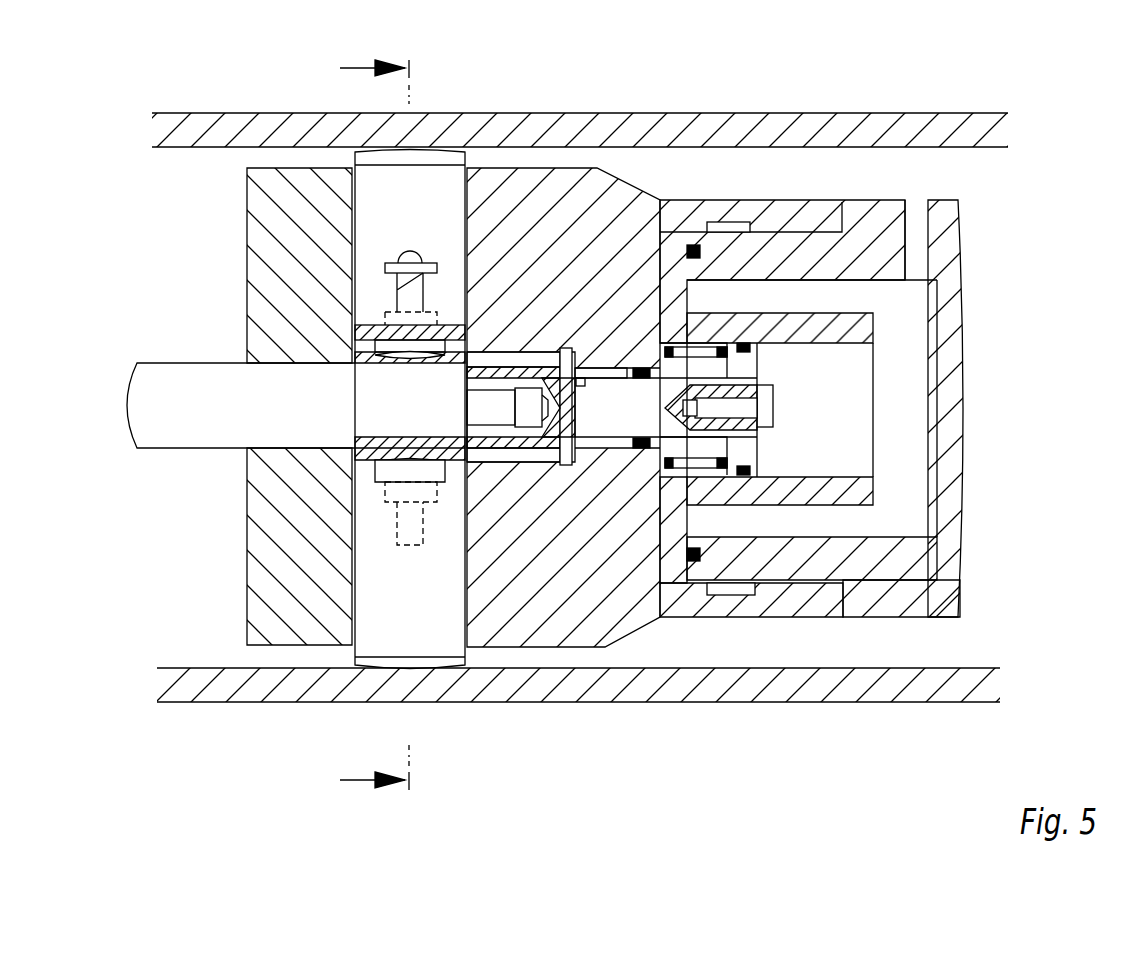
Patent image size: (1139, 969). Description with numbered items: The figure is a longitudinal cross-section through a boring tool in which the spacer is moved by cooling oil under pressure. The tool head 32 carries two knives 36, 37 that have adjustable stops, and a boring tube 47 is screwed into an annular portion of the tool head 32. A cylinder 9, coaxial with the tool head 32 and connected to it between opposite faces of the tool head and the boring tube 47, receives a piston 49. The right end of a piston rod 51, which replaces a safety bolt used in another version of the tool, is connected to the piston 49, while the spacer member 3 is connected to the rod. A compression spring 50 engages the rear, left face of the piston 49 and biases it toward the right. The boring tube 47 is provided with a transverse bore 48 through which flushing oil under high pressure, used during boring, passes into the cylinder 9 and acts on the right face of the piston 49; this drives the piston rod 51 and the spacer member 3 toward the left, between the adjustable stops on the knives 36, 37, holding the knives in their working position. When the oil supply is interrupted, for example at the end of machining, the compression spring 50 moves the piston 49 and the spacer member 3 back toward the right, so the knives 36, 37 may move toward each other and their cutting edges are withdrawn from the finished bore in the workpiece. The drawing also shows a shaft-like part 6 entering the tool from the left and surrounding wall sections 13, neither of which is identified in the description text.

The housing wall 13 is at (832, 132).
The tool head 32 is at (547, 248).
The knife 36 is at (418, 207).
The knife 37 is at (427, 602).
The drive shaft 6 is at (195, 403).
The spacer member 3 is at (387, 443).
The piston rod 51 is at (612, 417).
The transverse bore 48 is at (913, 222).
The boring tube 47 is at (943, 265).
The piston 49 is at (745, 447).
The cylinder 9 is at (830, 460).
The compression spring 50 is at (693, 465).